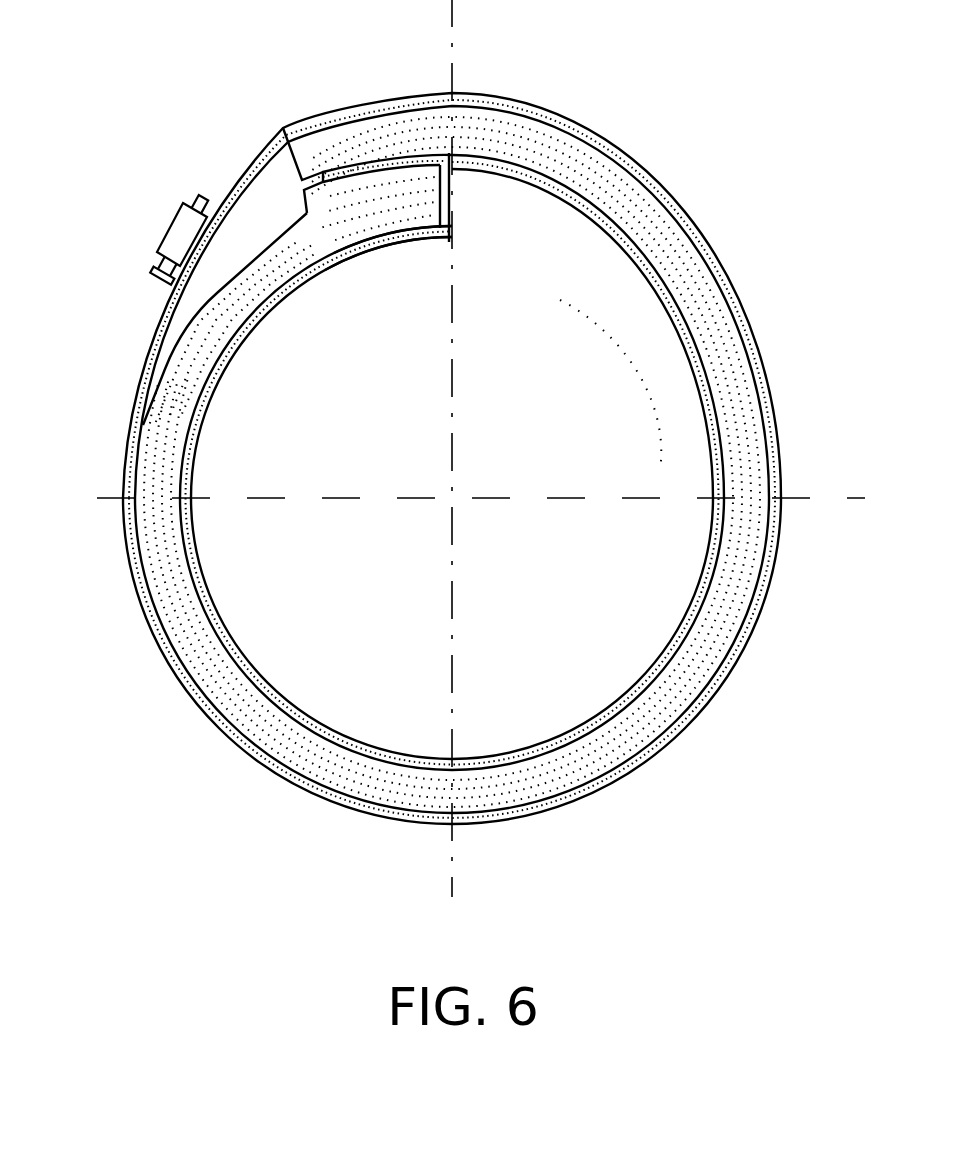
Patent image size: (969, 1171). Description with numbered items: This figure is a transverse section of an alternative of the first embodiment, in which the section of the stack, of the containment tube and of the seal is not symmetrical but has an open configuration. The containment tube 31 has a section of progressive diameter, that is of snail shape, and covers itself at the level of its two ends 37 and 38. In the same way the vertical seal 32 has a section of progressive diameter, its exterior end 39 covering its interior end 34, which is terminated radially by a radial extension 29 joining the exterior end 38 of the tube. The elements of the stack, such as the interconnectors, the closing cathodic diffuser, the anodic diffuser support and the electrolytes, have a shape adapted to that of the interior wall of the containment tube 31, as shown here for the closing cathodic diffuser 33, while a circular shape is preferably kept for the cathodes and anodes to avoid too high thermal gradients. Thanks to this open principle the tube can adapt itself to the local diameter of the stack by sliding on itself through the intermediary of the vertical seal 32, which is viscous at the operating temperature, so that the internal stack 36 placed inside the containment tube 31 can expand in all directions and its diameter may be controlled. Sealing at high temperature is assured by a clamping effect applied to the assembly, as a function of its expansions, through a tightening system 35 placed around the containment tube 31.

The radial extension 29 is at (443, 188).
The containment tube 31 is at (158, 481).
The vertical seal 32 is at (705, 478).
The closing cathodic diffuser 33 is at (530, 206).
The interior end 34 is at (408, 238).
The tightening system 35 is at (227, 183).
The internal stack 36 is at (650, 353).
The end of containment tube 37 is at (320, 148).
The exterior end of containment tube 38 is at (413, 200).
The exterior end of vertical seal 39 is at (352, 170).